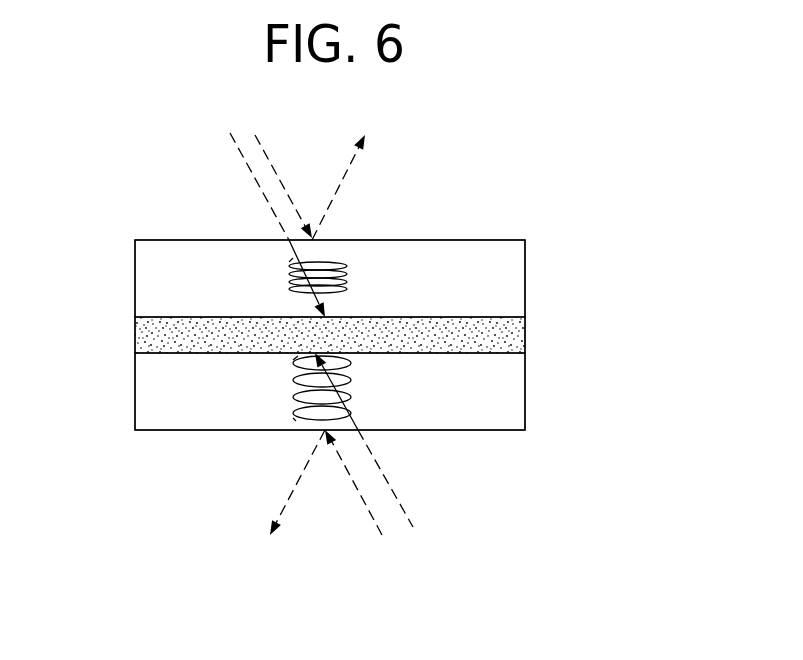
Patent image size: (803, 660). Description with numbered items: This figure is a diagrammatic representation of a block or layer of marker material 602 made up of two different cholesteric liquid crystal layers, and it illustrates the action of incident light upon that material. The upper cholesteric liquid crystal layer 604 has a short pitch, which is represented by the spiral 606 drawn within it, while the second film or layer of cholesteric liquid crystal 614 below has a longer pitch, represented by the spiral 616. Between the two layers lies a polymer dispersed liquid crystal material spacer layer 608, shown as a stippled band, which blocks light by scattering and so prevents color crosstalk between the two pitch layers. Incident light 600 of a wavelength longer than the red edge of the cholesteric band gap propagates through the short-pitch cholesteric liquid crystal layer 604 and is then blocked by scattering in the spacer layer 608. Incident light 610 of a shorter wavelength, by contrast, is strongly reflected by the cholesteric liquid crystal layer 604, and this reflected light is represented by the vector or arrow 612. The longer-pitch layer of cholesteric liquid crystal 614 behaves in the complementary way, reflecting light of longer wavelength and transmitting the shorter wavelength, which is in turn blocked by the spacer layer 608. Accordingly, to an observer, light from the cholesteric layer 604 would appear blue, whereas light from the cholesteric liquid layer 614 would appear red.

The incident light 600 is at (255, 182).
The marker material 602 is at (135, 468).
The cholesteric liquid crystal layer 604 is at (495, 282).
The spiral 606 is at (345, 265).
The polymer dispersed liquid crystal material spacer layer 608 is at (507, 338).
The incident light 610 is at (267, 158).
The arrow 612 is at (338, 190).
The second layer of cholesteric liquid crystal 614 is at (498, 393).
The spiral 616 is at (350, 380).